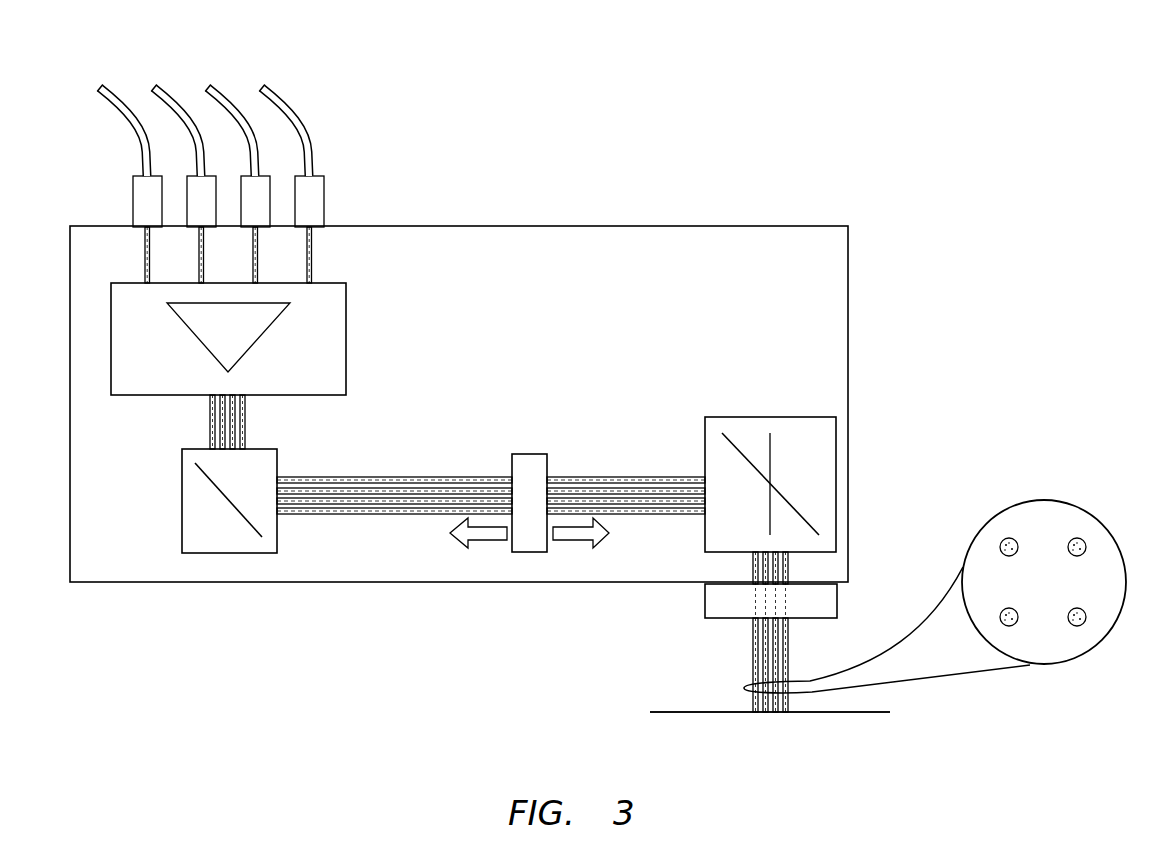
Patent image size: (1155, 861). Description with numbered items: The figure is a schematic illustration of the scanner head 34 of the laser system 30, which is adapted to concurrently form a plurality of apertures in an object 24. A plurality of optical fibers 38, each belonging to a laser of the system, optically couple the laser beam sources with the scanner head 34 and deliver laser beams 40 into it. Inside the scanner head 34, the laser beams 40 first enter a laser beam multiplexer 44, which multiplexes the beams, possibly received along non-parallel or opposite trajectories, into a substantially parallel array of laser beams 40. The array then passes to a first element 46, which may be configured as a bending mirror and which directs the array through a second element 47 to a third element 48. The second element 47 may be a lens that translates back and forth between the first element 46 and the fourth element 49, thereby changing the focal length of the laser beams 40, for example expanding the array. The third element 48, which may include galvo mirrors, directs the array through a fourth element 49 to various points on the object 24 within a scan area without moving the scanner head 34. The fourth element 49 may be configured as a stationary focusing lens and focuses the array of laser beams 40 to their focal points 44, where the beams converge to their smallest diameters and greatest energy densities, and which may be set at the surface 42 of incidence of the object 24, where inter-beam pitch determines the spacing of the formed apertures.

The object 24 is at (878, 712).
The laser system 30 is at (466, 107).
The scanner head 34 is at (735, 224).
The optical fiber 38 is at (115, 108).
The laser beams 40 is at (145, 257).
The surface of incidence 42 is at (677, 712).
The laser beam multiplexer 44 is at (347, 328).
The first element 46 is at (182, 505).
The second element 47 is at (528, 454).
The third element 48 is at (738, 417).
The fourth element 49 is at (705, 598).